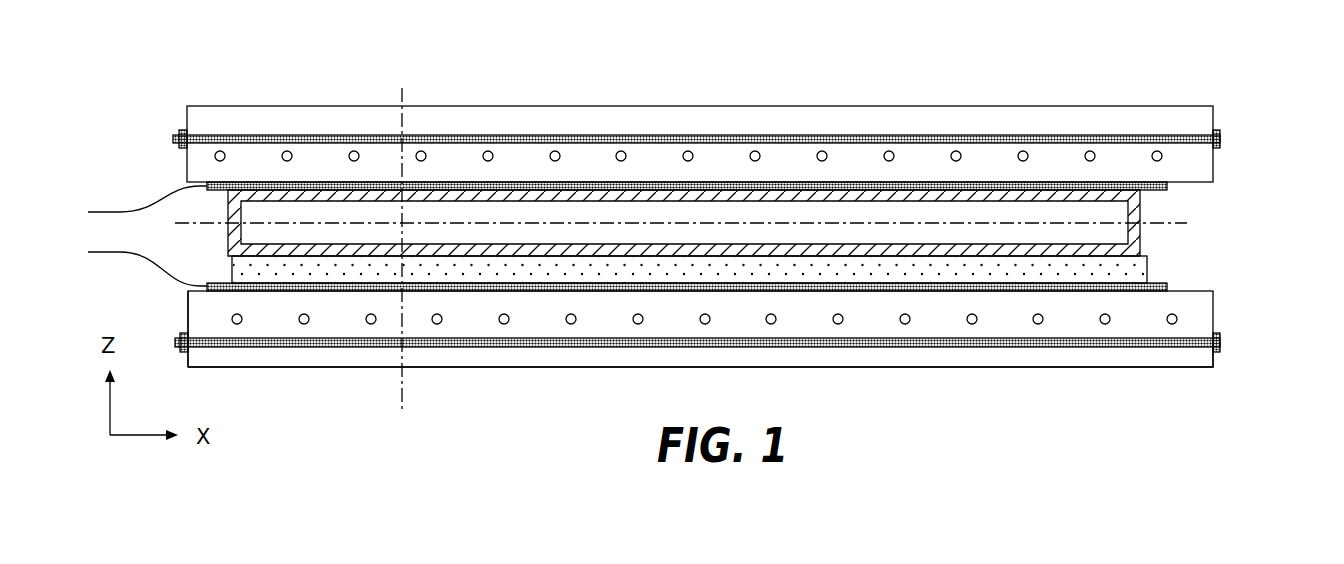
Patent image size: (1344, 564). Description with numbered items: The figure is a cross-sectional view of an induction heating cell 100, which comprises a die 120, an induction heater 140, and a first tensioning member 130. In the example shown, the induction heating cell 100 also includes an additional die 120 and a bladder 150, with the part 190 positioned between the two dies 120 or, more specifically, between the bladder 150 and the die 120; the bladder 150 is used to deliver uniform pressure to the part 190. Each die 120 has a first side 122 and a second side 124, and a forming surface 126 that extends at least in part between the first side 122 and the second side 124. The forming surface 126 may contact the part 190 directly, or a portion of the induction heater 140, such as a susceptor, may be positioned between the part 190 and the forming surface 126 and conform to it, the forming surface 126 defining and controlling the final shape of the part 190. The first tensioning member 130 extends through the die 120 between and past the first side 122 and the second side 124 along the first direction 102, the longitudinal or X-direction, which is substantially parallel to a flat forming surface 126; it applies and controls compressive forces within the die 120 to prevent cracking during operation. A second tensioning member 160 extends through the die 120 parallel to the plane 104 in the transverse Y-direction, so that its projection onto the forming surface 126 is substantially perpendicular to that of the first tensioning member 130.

The induction heating cell 100 is at (202, 76).
The first direction 102 is at (338, 222).
The plane 104 is at (400, 94).
The die 120 is at (1200, 161).
The first side 122 is at (1214, 357).
The second side 124 is at (188, 305).
The forming surface 126 is at (1002, 274).
The first tensioning member 130 is at (1222, 342).
The induction heater 140 is at (1167, 287).
The bladder 150 is at (1139, 210).
The second tensioning member 160 is at (905, 326).
The part 190 is at (1135, 270).